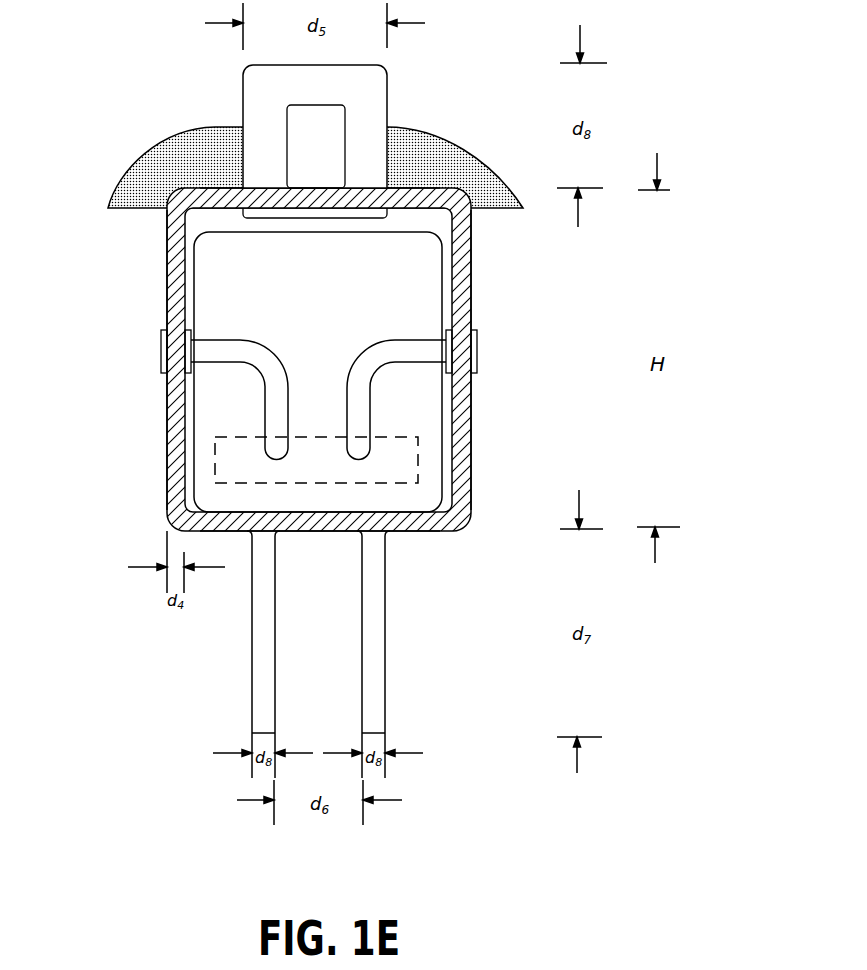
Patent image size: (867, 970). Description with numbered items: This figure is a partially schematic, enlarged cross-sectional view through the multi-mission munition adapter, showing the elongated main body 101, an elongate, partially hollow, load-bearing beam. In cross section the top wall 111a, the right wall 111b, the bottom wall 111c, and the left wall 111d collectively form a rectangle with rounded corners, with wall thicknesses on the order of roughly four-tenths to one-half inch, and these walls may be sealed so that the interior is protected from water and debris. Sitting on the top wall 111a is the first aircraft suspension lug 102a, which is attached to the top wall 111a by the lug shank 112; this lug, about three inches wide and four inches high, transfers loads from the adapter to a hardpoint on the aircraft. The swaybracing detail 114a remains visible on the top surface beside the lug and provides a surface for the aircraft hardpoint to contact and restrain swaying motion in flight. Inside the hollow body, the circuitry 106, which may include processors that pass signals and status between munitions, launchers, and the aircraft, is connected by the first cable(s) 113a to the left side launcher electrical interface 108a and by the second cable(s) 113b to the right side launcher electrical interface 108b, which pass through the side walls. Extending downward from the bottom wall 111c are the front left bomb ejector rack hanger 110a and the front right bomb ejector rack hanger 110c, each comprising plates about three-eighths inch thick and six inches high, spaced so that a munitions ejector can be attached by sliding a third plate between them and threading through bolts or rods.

The elongated main body 101 is at (165, 208).
The first aircraft suspension lug 102a is at (382, 63).
The circuitry 106 is at (328, 488).
The left side launcher electrical interface 108a is at (476, 338).
The right side launcher electrical interface 108b is at (163, 337).
The front left bomb ejector rack hanger 110a is at (387, 625).
The front right bomb ejector rack hanger 110c is at (252, 623).
The top wall 111a is at (203, 188).
The right wall 111b is at (170, 308).
The bottom wall 111c is at (438, 532).
The left wall 111d is at (470, 387).
The lug shank 112 is at (381, 219).
The first cable(s) 113a is at (360, 366).
The second cable(s) 113b is at (288, 403).
The swaybracing detail 114a is at (214, 127).